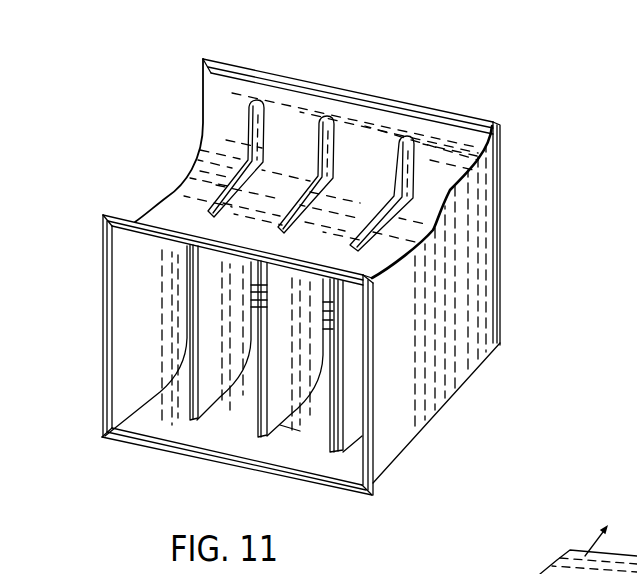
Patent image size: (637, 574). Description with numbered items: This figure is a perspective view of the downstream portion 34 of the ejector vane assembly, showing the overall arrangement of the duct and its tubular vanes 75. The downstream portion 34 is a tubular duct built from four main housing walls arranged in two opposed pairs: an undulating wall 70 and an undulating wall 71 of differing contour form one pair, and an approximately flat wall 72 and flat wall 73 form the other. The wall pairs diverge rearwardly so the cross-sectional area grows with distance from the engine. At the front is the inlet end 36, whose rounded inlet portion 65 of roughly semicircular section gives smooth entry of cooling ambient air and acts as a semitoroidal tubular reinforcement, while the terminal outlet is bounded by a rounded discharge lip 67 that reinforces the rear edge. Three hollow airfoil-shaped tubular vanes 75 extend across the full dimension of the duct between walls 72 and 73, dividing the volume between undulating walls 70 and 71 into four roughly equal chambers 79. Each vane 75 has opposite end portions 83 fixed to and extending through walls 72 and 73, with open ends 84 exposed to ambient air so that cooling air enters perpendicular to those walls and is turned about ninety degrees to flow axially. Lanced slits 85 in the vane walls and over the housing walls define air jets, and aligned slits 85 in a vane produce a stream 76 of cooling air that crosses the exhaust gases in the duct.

The downstream portion 34 is at (196, 122).
The inlet end 36 is at (102, 282).
The rounded inlet portion 65 is at (170, 453).
The rounded discharge lip 67 is at (500, 281).
The undulating wall 70 is at (124, 325).
The undulating wall 71 is at (436, 383).
The flat wall 72 is at (380, 137).
The flat wall 73 is at (311, 454).
The tubular vane 75 is at (268, 111).
The stream 76 is at (582, 538).
The chamber 79 is at (229, 354).
The end portion 83 is at (250, 117).
The open end 84 is at (490, 84).
The slit 85 is at (187, 202).